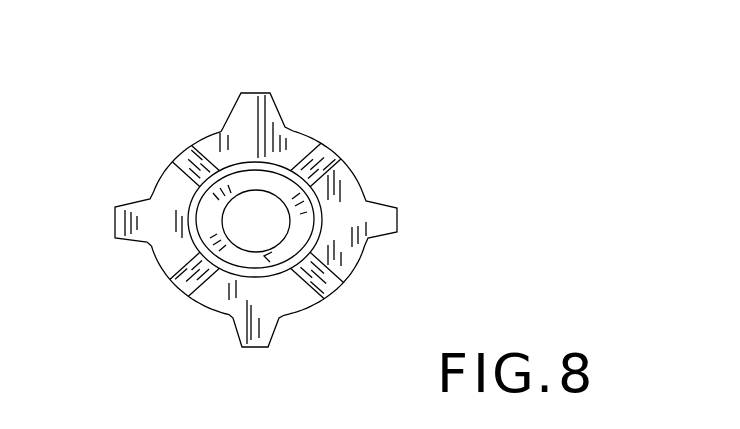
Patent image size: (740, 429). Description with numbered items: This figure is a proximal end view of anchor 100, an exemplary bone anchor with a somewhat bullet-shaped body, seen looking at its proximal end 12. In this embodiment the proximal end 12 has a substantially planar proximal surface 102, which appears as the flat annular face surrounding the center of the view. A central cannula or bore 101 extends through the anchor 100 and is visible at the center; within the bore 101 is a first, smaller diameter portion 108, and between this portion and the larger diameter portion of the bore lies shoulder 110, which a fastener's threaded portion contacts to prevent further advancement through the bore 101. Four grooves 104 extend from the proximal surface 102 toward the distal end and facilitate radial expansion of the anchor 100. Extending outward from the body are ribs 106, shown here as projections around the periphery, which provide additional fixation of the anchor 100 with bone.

The anchor 100 is at (268, 207).
The proximal end 12 is at (263, 207).
The central cannula or bore 101 is at (210, 232).
The proximal surface 102 is at (247, 137).
The grooves 104 is at (188, 157).
The ribs 106 is at (253, 102).
The smaller diameter portion 108 is at (275, 215).
The shoulder 110 is at (270, 262).